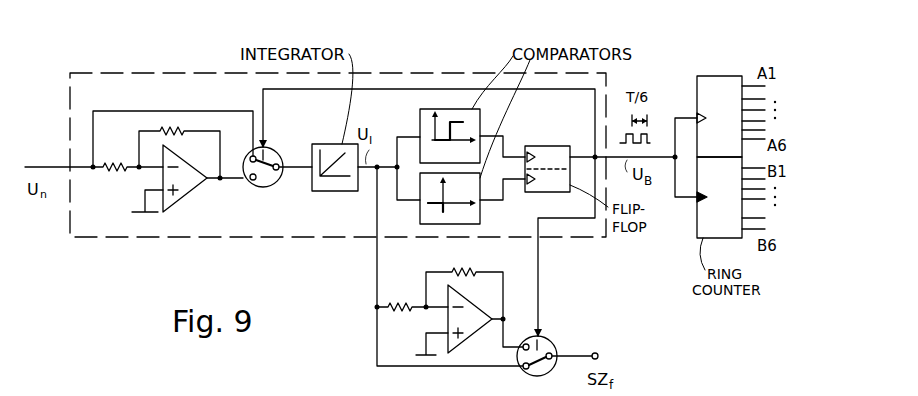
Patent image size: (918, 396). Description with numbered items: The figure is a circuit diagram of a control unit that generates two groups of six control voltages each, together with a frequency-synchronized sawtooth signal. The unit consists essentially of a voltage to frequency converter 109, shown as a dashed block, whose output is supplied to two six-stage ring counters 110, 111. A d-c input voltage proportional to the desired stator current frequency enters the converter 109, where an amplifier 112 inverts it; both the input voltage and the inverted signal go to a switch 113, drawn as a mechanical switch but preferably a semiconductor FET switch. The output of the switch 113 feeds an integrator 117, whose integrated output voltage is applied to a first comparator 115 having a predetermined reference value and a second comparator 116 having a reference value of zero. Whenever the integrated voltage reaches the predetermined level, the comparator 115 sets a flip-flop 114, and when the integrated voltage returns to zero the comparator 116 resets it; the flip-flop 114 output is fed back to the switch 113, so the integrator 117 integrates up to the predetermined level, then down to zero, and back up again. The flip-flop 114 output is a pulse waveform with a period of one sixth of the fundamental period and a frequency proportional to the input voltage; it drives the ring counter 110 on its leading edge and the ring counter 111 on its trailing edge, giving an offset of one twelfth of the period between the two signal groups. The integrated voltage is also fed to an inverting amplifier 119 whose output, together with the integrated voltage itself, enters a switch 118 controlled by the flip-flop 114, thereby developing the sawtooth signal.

The voltage to frequency converter 109 is at (314, 242).
The ring counter 110 is at (731, 116).
The ring counter 111 is at (731, 197).
The amplifier 112 is at (158, 178).
The switch 113 is at (258, 187).
The flip-flop 114 is at (560, 144).
The comparator 115 is at (452, 136).
The comparator 116 is at (419, 214).
The integrator 117 is at (332, 143).
The switch 118 is at (557, 348).
The inverting amplifier 119 is at (447, 321).